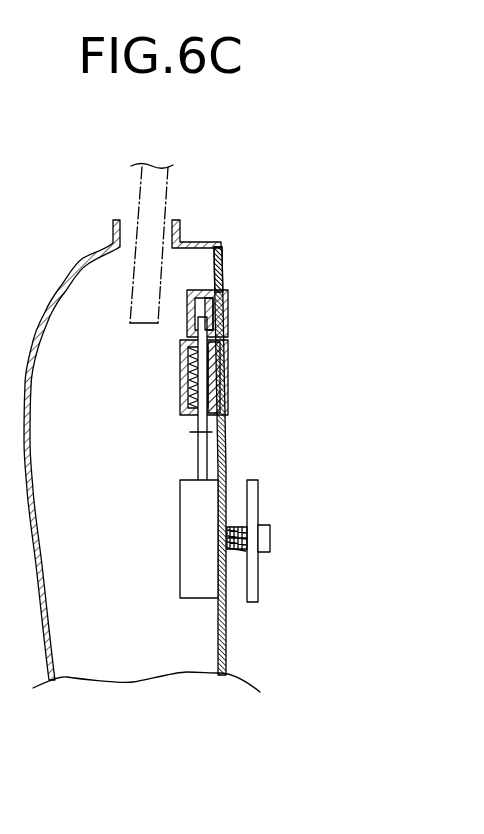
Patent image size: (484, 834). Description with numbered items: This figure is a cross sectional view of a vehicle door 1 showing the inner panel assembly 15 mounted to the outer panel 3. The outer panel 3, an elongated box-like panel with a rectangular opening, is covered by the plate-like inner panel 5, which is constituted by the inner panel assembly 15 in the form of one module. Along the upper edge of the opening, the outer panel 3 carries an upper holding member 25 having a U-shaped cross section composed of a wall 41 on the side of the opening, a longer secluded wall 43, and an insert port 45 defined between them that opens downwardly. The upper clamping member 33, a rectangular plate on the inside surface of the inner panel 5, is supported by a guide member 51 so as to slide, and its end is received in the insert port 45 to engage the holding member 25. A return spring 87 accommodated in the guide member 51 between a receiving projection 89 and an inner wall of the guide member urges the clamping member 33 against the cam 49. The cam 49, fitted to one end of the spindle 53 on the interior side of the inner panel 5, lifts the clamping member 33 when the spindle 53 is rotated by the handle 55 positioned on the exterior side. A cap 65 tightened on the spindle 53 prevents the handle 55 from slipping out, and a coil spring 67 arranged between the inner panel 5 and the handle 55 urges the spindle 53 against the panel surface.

The vehicle door 1 is at (218, 220).
The outer panel 3 is at (78, 260).
The inner panel 5 is at (228, 380).
The inner panel assembly 15 is at (231, 461).
The upper holding member 25 is at (199, 290).
The upper clamping member 33 is at (200, 470).
The wall 41 is at (228, 323).
The secluded wall 43 is at (187, 325).
The insert port 45 is at (224, 273).
The cam 49 is at (180, 556).
The guide member 51 is at (182, 406).
The spindle 53 is at (236, 526).
The handle 55 is at (258, 485).
The cap 65 is at (270, 539).
The coil spring 67 is at (242, 553).
The return spring 87 is at (185, 377).
The receiving projection 89 is at (195, 432).